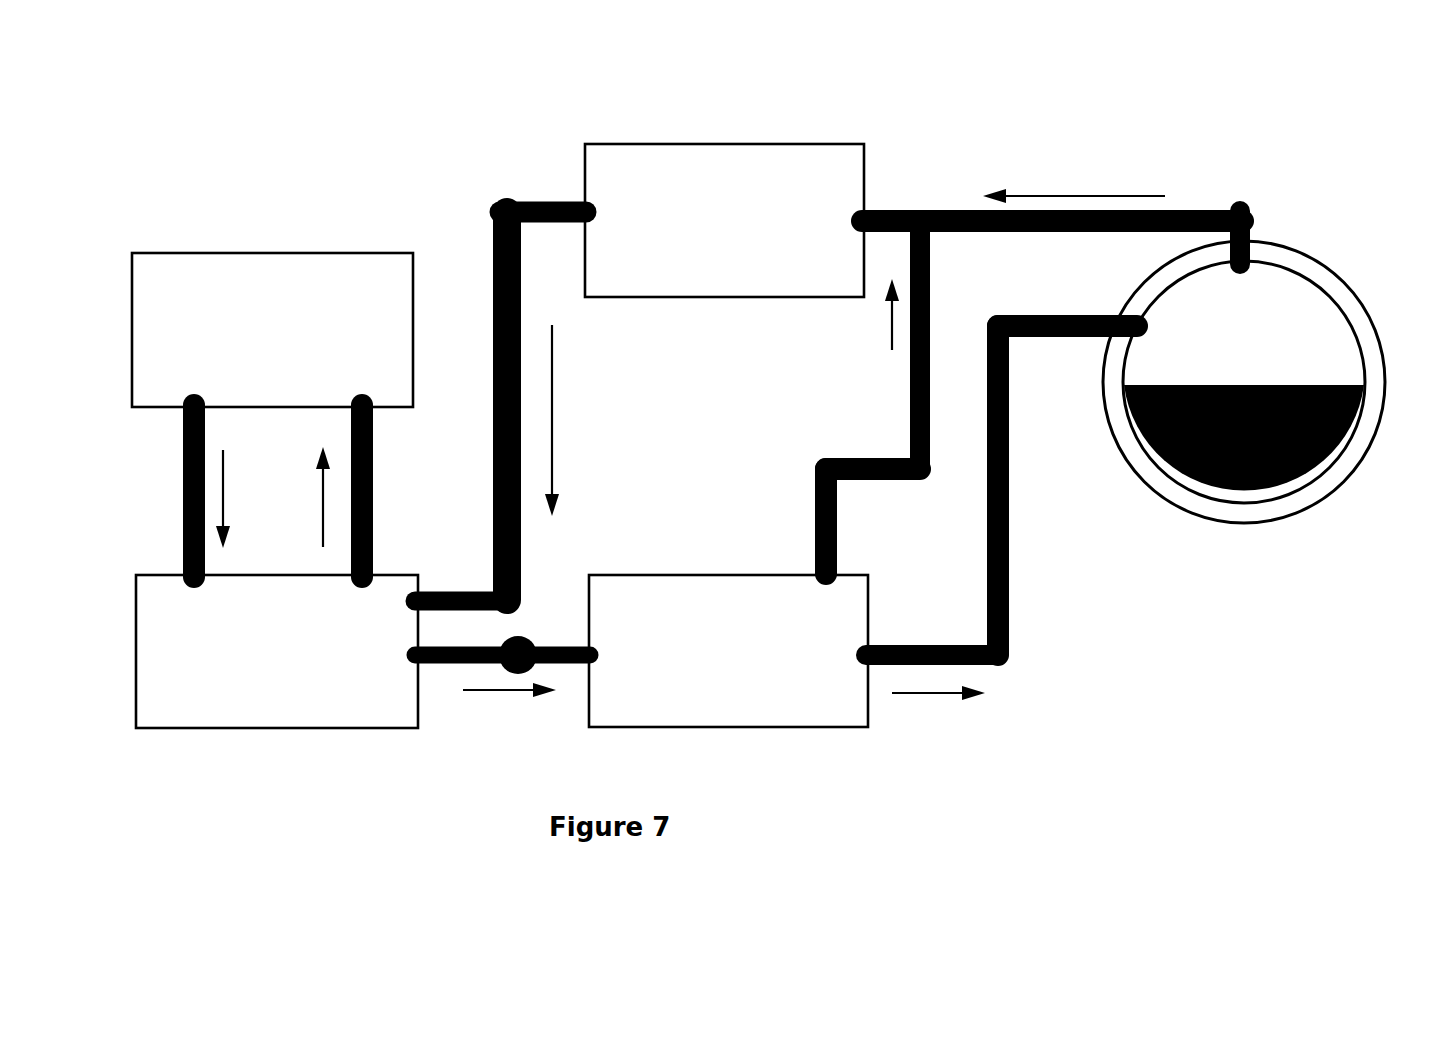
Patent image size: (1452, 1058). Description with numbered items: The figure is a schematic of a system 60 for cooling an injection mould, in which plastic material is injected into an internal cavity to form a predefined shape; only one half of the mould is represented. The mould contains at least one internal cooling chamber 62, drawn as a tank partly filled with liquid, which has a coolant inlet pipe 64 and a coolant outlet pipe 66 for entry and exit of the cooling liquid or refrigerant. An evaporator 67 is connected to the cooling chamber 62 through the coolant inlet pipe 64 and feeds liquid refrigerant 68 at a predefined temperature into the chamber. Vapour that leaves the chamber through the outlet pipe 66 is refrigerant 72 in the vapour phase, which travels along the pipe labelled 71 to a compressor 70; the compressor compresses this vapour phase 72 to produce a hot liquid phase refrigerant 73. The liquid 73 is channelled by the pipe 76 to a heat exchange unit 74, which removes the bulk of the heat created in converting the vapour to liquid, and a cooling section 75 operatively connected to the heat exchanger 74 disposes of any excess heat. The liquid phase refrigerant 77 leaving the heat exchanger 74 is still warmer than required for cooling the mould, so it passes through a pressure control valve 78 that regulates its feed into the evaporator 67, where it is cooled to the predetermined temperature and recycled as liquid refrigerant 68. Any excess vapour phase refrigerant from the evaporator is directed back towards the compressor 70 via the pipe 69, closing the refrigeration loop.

The system 60 is at (1300, 130).
The internal cooling chamber 62 is at (1355, 312).
The coolant inlet pipe 64 is at (1125, 338).
The coolant outlet pipe 66 is at (1250, 226).
The evaporator 67 is at (833, 722).
The liquid refrigerant 68 is at (1008, 596).
The pipe 69 is at (930, 318).
The compressor 70 is at (850, 160).
The pipe section 71 is at (895, 212).
The vapour phase refrigerant 72 is at (1198, 212).
The liquid phase refrigerant 73 is at (517, 202).
The heat exchange unit 74 is at (322, 712).
The cooling section 75 is at (303, 270).
The pipe 76 is at (522, 381).
The liquid phase refrigerant 77 is at (460, 667).
The pressure control valve 78 is at (512, 676).